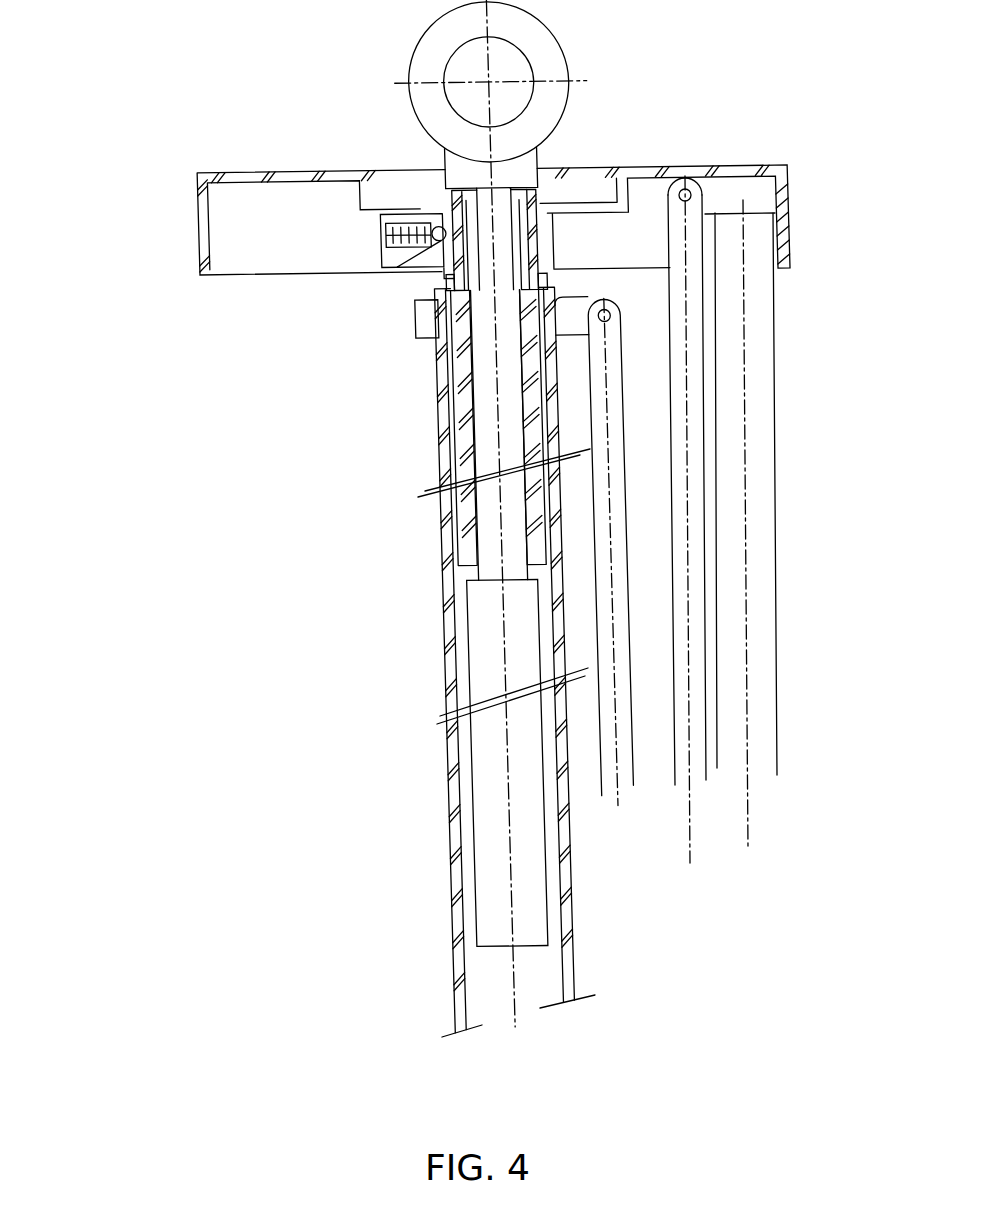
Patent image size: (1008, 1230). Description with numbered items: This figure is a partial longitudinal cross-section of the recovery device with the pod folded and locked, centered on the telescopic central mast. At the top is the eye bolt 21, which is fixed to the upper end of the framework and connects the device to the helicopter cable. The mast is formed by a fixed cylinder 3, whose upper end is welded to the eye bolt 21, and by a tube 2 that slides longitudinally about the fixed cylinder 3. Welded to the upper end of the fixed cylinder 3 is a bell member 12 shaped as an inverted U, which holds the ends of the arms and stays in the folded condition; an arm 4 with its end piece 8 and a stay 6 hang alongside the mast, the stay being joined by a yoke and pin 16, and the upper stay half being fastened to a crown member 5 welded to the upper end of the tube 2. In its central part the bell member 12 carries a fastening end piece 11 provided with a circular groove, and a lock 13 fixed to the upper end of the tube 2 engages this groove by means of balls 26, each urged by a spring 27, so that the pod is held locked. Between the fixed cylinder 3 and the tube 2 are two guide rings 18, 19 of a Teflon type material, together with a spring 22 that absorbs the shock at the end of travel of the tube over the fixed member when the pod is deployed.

The tube 2 is at (462, 950).
The fixed cylinder 3 is at (468, 826).
The arm 4 is at (752, 250).
The crown member 5 is at (425, 316).
The stay 6 is at (695, 307).
The end piece 8 is at (760, 193).
The fastening end piece 11 is at (460, 203).
The bell member 12 is at (430, 229).
The lock 13 is at (392, 258).
The pin 16 is at (690, 192).
The guide ring 18 is at (457, 612).
The guide ring 19 is at (457, 284).
The eye bolt 21 is at (556, 72).
The spring 22 is at (453, 525).
The ball 26 is at (437, 231).
The spring 27 is at (433, 235).